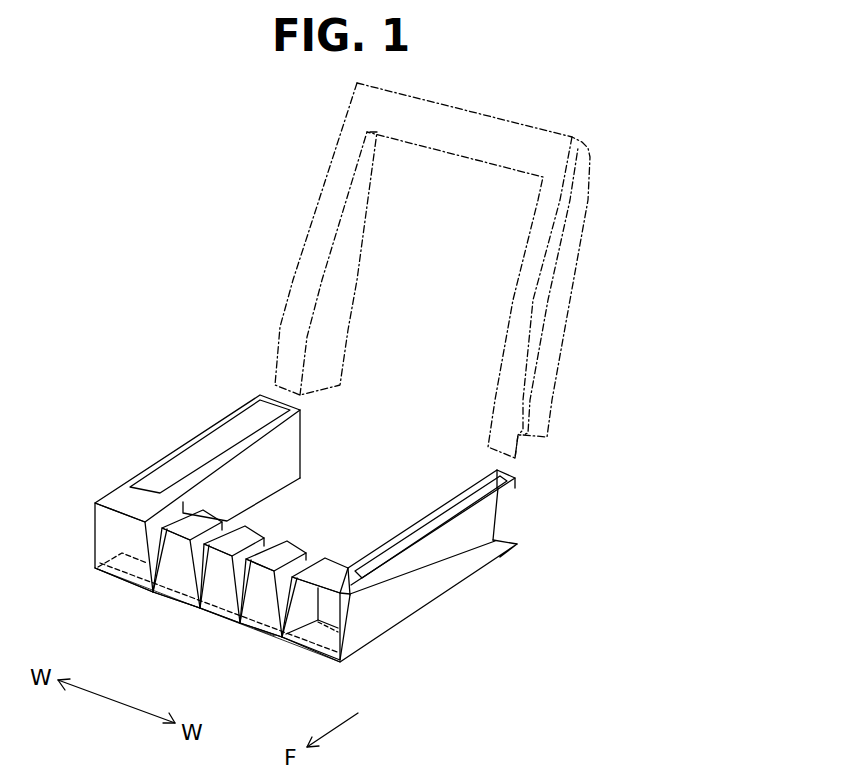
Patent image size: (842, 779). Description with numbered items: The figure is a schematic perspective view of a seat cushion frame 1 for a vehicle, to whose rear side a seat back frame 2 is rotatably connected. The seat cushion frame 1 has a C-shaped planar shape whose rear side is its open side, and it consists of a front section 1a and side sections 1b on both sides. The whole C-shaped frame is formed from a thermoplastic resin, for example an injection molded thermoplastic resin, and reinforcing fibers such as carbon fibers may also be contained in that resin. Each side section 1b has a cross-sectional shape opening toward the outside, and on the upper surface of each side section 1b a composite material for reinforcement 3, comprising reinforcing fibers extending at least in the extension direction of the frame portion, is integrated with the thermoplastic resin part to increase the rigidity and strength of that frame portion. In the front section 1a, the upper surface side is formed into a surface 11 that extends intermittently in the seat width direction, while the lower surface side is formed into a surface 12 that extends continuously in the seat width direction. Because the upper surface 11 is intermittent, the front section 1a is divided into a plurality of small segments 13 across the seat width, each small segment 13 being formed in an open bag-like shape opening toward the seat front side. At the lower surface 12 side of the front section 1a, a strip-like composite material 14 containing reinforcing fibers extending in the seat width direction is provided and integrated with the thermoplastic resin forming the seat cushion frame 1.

The seat cushion frame 1 is at (457, 595).
The front section 1a is at (217, 620).
The side section 1b is at (148, 468).
The seat back frame 2 is at (572, 315).
The composite material for reinforcement 3 is at (222, 440).
The surface intermittently extending in the seat width direction 11 is at (283, 558).
The surface continuously extending in the seat width direction 12 is at (264, 635).
The small segment 13 is at (260, 598).
The strip-like composite material 14 is at (318, 640).